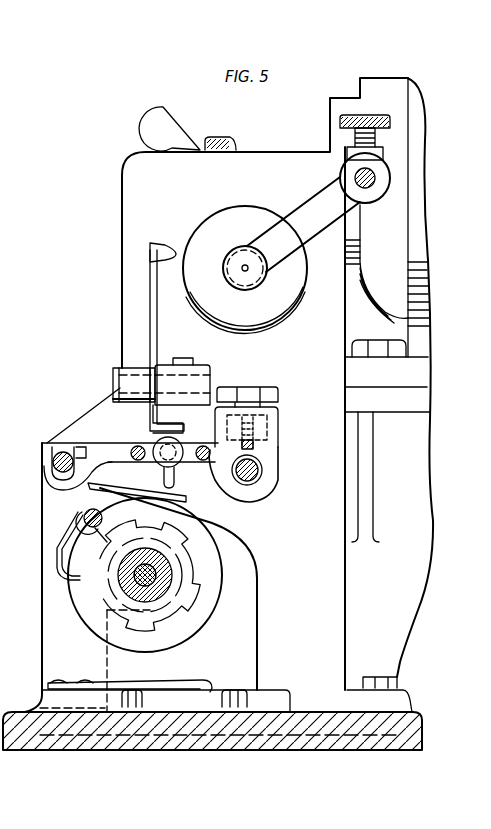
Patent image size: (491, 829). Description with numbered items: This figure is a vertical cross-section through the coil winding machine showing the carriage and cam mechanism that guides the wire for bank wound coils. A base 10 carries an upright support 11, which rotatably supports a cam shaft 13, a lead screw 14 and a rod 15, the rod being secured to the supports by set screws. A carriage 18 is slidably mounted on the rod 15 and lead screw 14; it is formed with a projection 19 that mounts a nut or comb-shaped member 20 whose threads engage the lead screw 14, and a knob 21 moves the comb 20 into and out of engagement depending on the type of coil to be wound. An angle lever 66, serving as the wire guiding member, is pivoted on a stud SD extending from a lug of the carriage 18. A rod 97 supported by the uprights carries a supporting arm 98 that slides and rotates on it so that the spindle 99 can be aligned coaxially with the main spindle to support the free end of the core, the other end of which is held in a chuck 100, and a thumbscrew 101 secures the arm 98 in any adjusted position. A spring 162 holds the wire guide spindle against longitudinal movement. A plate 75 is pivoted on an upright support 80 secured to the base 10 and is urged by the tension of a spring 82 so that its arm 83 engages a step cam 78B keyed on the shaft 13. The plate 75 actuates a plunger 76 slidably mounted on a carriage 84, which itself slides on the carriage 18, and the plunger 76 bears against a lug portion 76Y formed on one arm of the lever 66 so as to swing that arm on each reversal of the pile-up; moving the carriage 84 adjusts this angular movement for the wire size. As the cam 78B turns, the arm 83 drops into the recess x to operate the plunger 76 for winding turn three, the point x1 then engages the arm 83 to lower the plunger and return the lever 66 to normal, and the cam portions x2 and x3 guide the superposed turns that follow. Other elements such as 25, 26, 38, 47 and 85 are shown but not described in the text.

The base 10 is at (97, 751).
The upright support 11 is at (133, 212).
The cam shaft 13 is at (137, 577).
The lead screw 14 is at (263, 476).
The rod 15 is at (57, 467).
The carriage 18 is at (262, 488).
The projection 19 is at (272, 409).
The comb-shaped member 20 is at (263, 456).
The knob 21 is at (247, 388).
The column 25 is at (415, 401).
The threaded sleeve 26 is at (395, 273).
The housing 38 is at (75, 594).
The handle knob 47 is at (173, 130).
The angle lever 66 is at (152, 325).
The plate 75 is at (130, 488).
The plunger 76 is at (174, 482).
The lug portion 76Y is at (153, 413).
The step cam 78B is at (193, 570).
The upright support 80 is at (247, 634).
The spring 82 is at (72, 514).
The arm 83 is at (57, 559).
The carriage 84 is at (136, 447).
The knob 85 is at (182, 440).
The rod 97 is at (375, 177).
The supporting arm 98 is at (308, 197).
The spindle 99 is at (252, 280).
The chuck 100 is at (222, 235).
The thumbscrew 101 is at (381, 123).
The spring 162 is at (177, 683).
The stud SD is at (112, 373).
The recess x is at (100, 627).
The cam point x1 is at (123, 637).
The cam portion x2 is at (153, 637).
The cam portion x3 is at (190, 627).